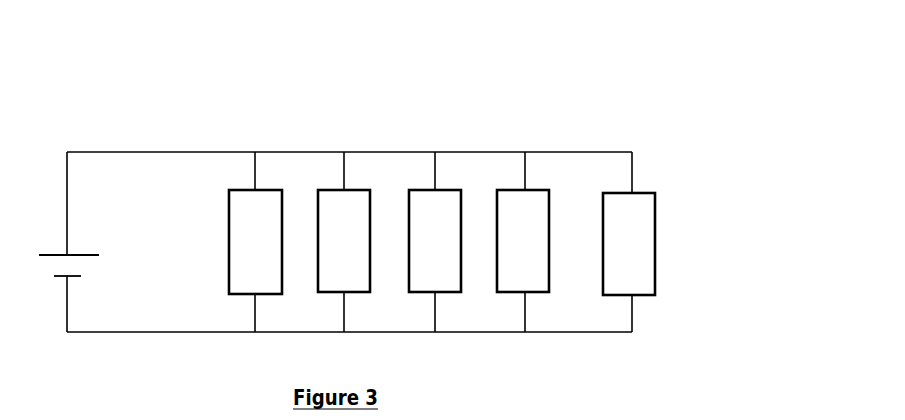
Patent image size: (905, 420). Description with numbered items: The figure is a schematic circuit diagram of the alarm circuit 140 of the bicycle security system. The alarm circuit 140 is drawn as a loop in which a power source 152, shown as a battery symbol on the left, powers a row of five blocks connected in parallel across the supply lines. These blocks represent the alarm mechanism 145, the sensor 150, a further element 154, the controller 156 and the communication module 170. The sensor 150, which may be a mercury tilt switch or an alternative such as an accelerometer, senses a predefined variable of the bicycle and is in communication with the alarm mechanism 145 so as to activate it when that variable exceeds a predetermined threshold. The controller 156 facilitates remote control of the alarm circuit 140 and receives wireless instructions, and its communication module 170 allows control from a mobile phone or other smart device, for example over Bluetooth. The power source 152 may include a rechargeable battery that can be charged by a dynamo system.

The alarm circuit 140 is at (648, 122).
The alarm mechanism 145 is at (245, 228).
The sensor 150 is at (333, 215).
The power source 152 is at (82, 266).
The third light source 154 is at (448, 209).
The controller 156 is at (522, 253).
The communication module 170 is at (638, 252).